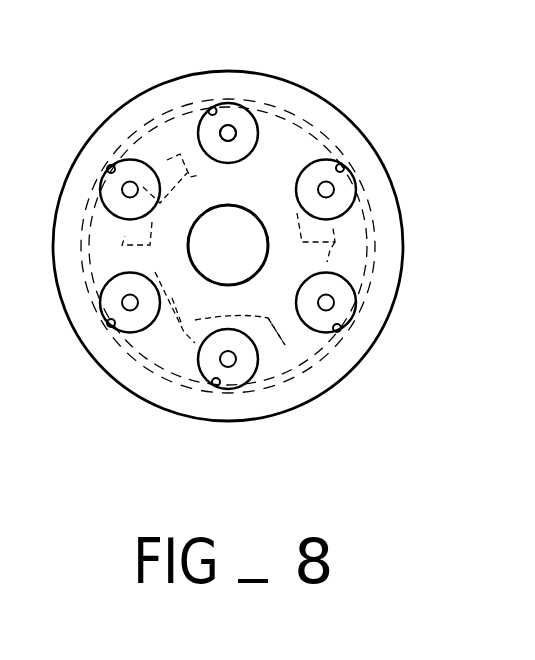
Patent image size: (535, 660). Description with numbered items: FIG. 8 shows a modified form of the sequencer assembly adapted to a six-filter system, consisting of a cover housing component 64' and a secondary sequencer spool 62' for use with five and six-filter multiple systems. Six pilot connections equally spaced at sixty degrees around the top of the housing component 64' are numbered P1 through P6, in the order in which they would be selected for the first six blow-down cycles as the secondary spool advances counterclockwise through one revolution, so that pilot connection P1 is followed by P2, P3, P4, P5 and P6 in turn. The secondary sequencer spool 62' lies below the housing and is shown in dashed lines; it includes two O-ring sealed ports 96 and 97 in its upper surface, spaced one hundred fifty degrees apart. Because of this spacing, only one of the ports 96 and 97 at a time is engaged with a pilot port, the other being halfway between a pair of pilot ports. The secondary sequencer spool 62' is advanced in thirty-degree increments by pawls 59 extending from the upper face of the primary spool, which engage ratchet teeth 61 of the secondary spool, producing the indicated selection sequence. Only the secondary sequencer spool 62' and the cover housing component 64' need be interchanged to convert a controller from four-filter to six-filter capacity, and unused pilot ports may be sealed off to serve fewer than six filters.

The pilot connection P1 is at (213, 108).
The pilot connection P2 is at (217, 383).
The pilot connection P3 is at (342, 166).
The pilot connection P4 is at (112, 325).
The pilot connection P5 is at (339, 333).
The pilot connection P6 is at (112, 168).
The O-ring sealed port 96 is at (230, 132).
The cover housing component 64' is at (228, 243).
The secondary sequencer spool 62' is at (265, 246).
The pawls 59 is at (310, 250).
The ratchet teeth 61 is at (124, 241).
The O-ring sealed port 97 is at (290, 367).